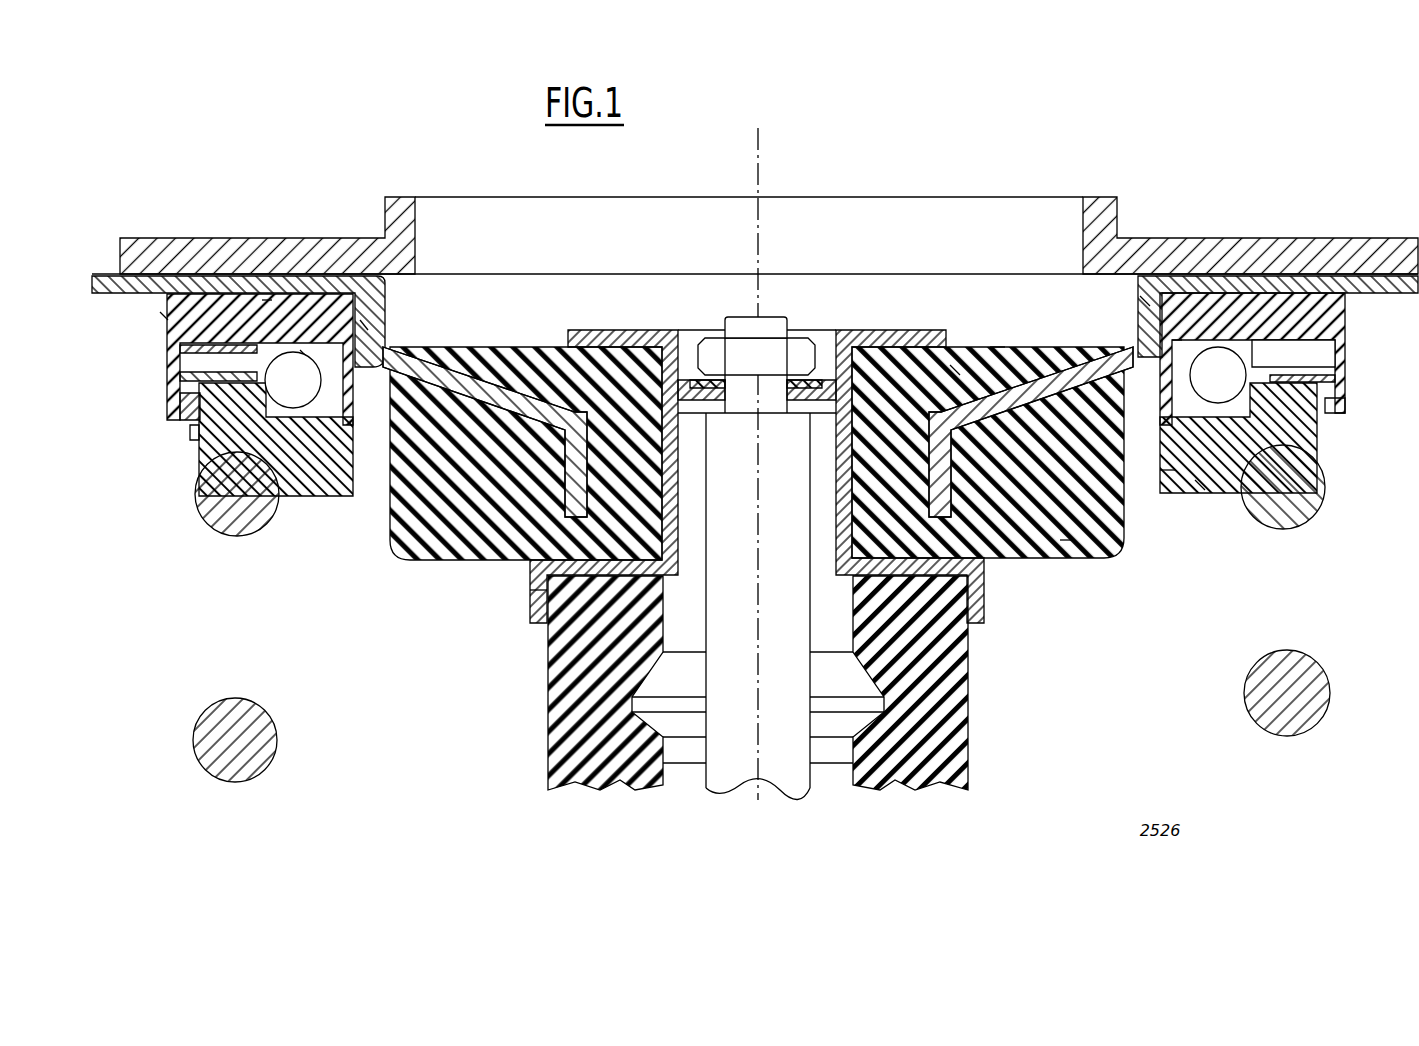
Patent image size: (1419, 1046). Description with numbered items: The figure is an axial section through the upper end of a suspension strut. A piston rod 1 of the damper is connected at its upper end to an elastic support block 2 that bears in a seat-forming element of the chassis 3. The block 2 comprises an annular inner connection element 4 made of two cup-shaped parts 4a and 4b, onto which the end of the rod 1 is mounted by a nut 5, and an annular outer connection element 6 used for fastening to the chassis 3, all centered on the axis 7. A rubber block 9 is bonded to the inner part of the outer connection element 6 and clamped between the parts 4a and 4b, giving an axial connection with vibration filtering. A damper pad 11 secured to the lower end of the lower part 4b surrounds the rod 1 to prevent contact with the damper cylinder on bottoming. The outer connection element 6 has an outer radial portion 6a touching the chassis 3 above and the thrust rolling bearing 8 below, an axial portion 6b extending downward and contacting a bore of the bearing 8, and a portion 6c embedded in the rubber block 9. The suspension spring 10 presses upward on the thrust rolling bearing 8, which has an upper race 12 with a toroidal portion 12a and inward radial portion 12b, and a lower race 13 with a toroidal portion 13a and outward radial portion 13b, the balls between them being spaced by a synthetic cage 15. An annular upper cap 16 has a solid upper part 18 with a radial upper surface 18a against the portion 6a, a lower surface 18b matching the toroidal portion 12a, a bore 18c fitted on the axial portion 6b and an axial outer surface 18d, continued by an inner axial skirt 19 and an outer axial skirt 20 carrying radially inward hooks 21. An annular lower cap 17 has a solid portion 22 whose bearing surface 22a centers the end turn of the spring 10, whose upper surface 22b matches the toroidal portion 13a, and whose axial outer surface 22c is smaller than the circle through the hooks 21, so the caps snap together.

The piston rod 1 is at (745, 770).
The elastic support block 2 is at (997, 338).
The chassis 3 is at (1133, 310).
The annular inner connection element 4 is at (684, 372).
The upper part of the inner connection element 4a is at (873, 332).
The lower part of the inner connection element 4b is at (540, 596).
The nut 5 is at (767, 356).
The annular outer connection element 6 is at (1108, 352).
The outer radial portion 6a is at (1325, 285).
The axial portion 6b is at (1146, 300).
The embedded portion 6c is at (956, 368).
The axis 7 is at (758, 172).
The thrust rolling bearing 8 is at (1340, 415).
The rubber block 9 is at (1070, 535).
The suspension spring 10 is at (1268, 708).
The damper pad 11 is at (960, 752).
The upper race 12 is at (1205, 320).
The toroidal portion of the upper race 12a is at (1243, 358).
The radial portion of the upper race 12b is at (1190, 340).
The lower race 13 is at (1250, 440).
The toroidal portion of the lower race 13a is at (1200, 492).
The radial portion of the lower race 13b is at (1320, 502).
The cage 15 is at (1278, 365).
The annular upper cap 16 is at (264, 300).
The annular lower cap 17 is at (1172, 492).
The solid upper part 18 is at (1300, 300).
The radial upper surface 18a is at (268, 300).
The lower surface 18b is at (210, 343).
The bore 18c is at (367, 327).
The axial outer surface 18d is at (162, 318).
The inner axial skirt 19 is at (436, 370).
The outer axial skirt 20 is at (178, 377).
The hooks 21 is at (178, 400).
The solid portion of the lower cap 22 is at (320, 480).
The bearing surface 22a is at (197, 494).
The upper surface of the solid portion 22b is at (305, 365).
The axial outer surface of the solid portion 22c is at (190, 435).